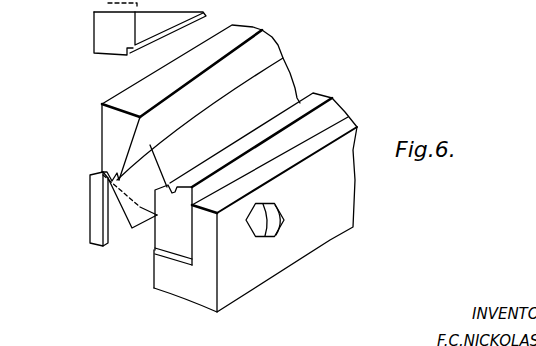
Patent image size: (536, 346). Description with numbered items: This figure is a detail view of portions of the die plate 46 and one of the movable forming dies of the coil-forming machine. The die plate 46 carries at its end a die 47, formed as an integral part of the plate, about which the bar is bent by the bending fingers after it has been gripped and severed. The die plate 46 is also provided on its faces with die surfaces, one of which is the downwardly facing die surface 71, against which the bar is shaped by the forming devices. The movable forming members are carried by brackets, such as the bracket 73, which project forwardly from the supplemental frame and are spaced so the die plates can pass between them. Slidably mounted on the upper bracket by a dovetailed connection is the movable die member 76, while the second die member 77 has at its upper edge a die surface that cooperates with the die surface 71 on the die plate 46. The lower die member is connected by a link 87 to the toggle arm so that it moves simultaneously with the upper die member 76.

The die plate 46 is at (175, 106).
The die 47 is at (107, 173).
The die surface 71 is at (189, 118).
The bracket 73 is at (138, 207).
The movable die member 76 is at (102, 32).
The second die member 77 is at (182, 233).
The link 87 is at (96, 2).